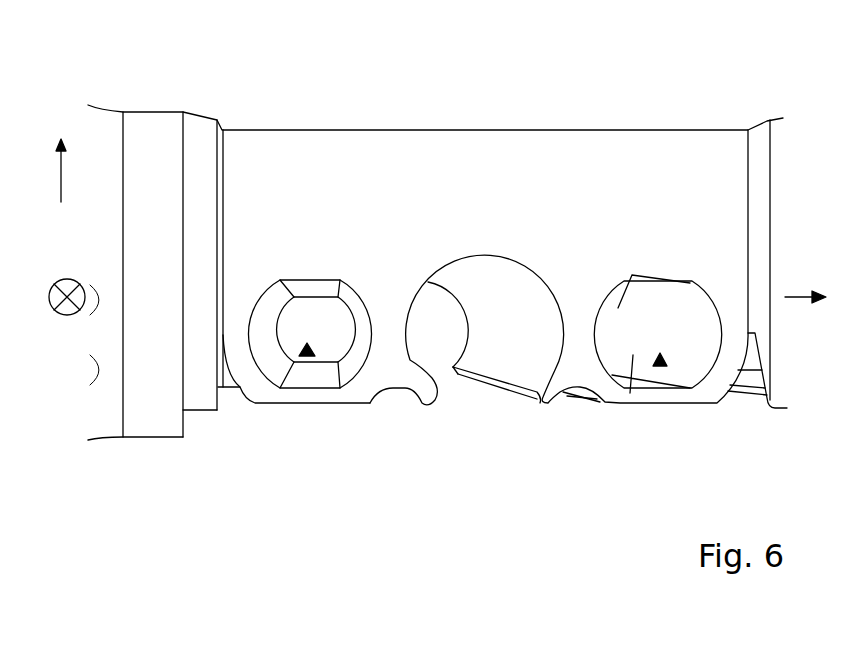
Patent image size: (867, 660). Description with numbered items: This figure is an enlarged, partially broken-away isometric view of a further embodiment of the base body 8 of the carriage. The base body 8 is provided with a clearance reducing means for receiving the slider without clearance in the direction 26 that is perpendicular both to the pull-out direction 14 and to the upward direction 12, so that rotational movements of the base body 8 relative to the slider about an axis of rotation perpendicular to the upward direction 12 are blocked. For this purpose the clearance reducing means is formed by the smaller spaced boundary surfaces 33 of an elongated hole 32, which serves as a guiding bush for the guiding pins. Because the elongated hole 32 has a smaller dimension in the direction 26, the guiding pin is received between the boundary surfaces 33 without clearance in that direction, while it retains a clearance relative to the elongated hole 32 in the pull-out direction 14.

The base body 8 is at (613, 160).
The upward direction 12 is at (67, 316).
The pull-out direction 14 is at (798, 307).
The direction perpendicular to the pull-out direction and to the upward direction 26 is at (60, 172).
The elongated hole 32 is at (307, 356).
The smaller spaced boundary surfaces 33 is at (318, 340).